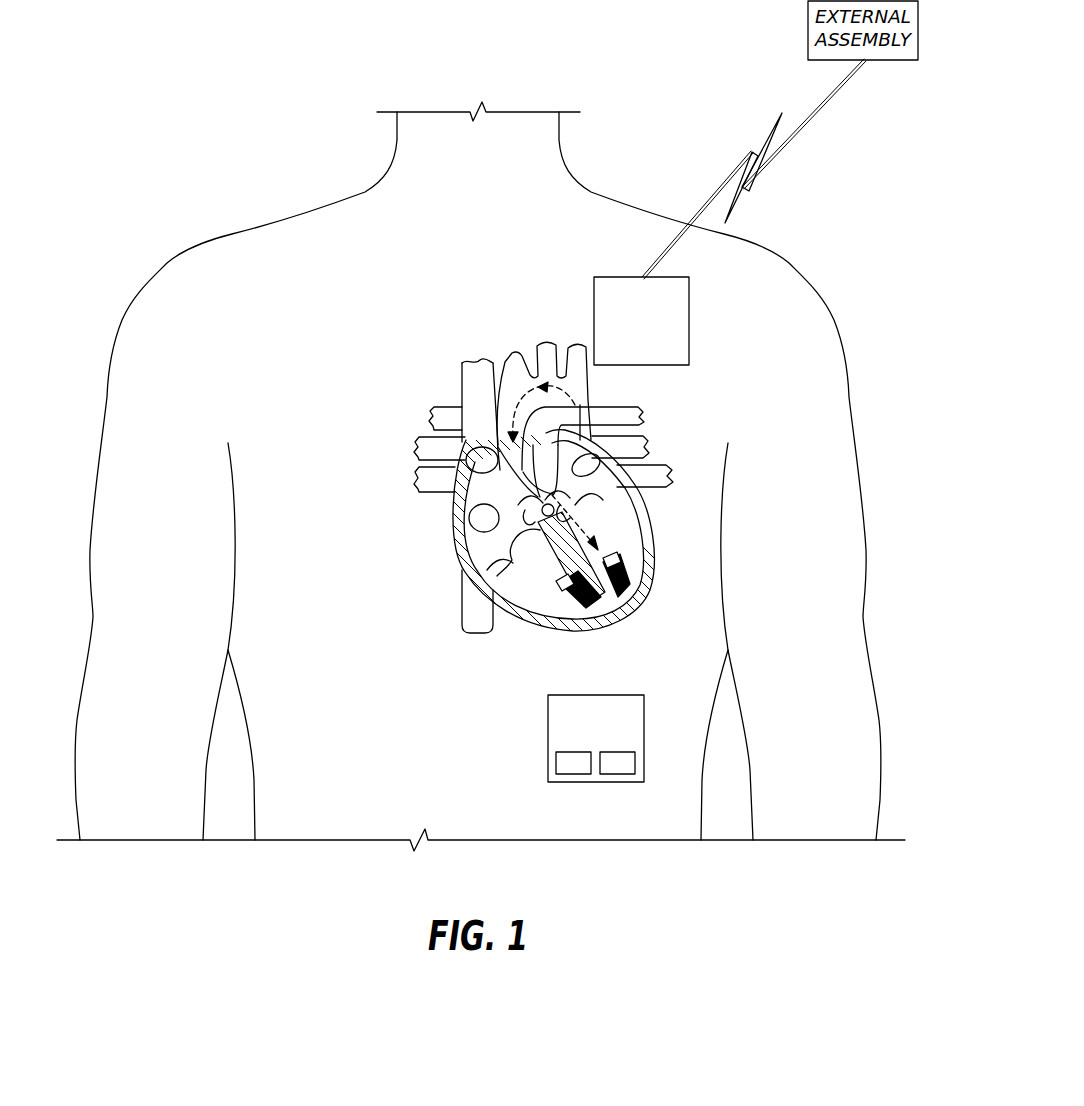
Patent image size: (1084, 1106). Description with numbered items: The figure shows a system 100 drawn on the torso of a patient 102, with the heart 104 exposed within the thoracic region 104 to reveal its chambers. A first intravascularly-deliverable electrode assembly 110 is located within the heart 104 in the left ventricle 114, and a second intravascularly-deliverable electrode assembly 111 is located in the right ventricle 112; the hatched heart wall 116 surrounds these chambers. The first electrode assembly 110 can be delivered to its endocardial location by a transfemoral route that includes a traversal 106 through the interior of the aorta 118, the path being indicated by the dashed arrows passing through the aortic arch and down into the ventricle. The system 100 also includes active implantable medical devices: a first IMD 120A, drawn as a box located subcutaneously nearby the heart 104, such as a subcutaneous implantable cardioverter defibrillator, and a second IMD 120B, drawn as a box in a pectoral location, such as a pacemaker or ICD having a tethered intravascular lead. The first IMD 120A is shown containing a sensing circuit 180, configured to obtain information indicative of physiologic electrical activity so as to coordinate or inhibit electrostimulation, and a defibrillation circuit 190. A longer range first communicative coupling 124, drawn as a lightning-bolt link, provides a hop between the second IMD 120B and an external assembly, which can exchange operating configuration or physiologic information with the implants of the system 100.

The system 100 is at (178, 36).
The patient 102 is at (230, 233).
The heart 104 is at (405, 398).
The traversal 106 is at (522, 402).
The first intravascularly-deliverable electrode assembly 110 is at (640, 558).
The second intravascularly-deliverable electrode assembly 111 is at (570, 592).
The right ventricle 112 is at (543, 590).
The left ventricle 114 is at (612, 525).
The heart wall / apex 116 is at (677, 585).
The aorta 118 is at (587, 392).
The first IMD 120A is at (598, 721).
The second IMD 120B is at (690, 320).
The first communicative coupling 124 is at (740, 163).
The sensing circuit 180 is at (556, 760).
The defibrillation circuit 190 is at (635, 762).